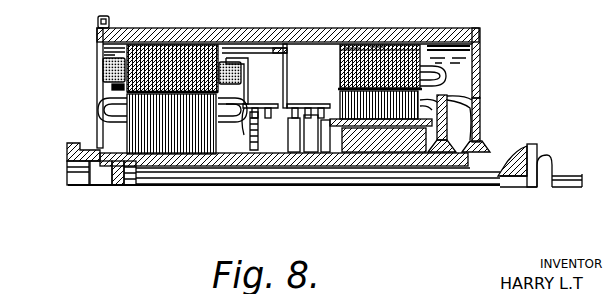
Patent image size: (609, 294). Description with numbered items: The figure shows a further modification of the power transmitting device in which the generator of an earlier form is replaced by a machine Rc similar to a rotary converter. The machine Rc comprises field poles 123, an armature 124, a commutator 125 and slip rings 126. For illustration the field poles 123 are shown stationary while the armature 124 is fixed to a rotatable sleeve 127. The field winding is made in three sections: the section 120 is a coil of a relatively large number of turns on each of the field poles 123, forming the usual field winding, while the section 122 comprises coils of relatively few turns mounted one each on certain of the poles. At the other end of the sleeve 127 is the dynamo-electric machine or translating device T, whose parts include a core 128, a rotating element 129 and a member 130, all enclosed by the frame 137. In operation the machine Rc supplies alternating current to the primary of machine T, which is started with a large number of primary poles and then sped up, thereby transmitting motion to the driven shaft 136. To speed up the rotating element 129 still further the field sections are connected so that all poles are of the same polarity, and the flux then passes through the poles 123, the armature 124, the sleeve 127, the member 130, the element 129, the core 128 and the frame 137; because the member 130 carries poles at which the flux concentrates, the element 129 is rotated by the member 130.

The field winding section 120 is at (103, 66).
The field winding section 122 is at (100, 84).
The field poles 123 is at (144, 45).
The machine Rc is at (179, 58).
The armature 124 is at (126, 126).
The commutator 125 is at (236, 142).
The slip rings 126 is at (296, 142).
The rotatable sleeve 127 is at (166, 160).
The core 128 is at (478, 66).
The rotating element 129 is at (479, 96).
The member 130 is at (448, 128).
The driven shaft 136 is at (571, 184).
The frame 137 is at (290, 32).
The dynamo-electric machine or translating device T is at (408, 44).